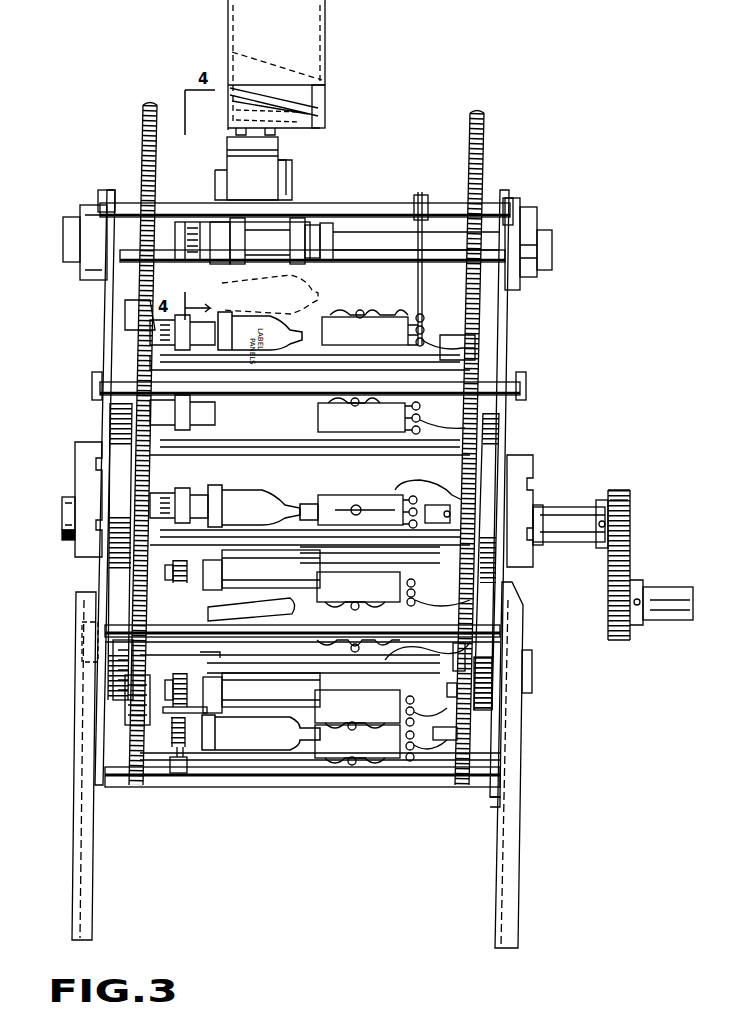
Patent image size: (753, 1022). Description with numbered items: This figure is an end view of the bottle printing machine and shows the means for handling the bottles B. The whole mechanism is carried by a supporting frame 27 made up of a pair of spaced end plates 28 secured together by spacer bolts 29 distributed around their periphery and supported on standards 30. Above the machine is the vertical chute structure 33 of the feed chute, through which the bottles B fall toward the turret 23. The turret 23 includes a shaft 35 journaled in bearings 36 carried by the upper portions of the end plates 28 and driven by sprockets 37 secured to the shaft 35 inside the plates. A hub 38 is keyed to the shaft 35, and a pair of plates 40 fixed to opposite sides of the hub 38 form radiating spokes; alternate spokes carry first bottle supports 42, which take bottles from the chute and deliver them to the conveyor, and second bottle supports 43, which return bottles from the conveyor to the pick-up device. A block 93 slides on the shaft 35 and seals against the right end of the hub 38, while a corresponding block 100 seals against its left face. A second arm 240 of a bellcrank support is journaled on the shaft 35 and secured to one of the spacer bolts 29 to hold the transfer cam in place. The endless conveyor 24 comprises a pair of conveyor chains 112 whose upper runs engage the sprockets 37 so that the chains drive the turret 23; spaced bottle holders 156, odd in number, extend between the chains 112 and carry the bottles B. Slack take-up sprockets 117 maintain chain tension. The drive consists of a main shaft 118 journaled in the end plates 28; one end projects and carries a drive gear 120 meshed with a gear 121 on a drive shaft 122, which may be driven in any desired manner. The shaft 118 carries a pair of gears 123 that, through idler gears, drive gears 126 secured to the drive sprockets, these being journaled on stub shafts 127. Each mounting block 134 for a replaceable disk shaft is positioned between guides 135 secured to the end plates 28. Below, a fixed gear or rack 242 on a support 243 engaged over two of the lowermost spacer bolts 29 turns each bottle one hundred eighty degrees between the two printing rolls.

The chute structure 33 is at (228, 22).
The bottle B is at (312, 90).
The sprockets 37 is at (143, 137).
The plates 40 is at (227, 170).
The second bottle supports 43 is at (206, 196).
The first bottle supports 42 is at (295, 176).
The spacer bolts 29 is at (345, 205).
The turret 23 is at (495, 193).
The bearings 36 is at (90, 212).
The block 100 is at (212, 265).
The hub 38 is at (222, 262).
The block 93 is at (312, 260).
The second arm 240 is at (416, 272).
The shaft 35 is at (443, 258).
The bottle holders 156 is at (348, 311).
The end plates 28 is at (107, 300).
The conveyor chains 112 is at (137, 335).
The endless conveyor 24 is at (526, 386).
The gears 123 is at (492, 432).
The guides 135 is at (85, 442).
The mounting block 134 is at (80, 478).
The drive gear 120 is at (625, 490).
The main shaft 118 is at (562, 512).
The stub shafts 127 is at (82, 636).
The slack take-up sprockets 117 is at (113, 670).
The gears 126 is at (125, 700).
The supporting frame 27 is at (520, 745).
The fixed gear or rack 242 is at (172, 750).
The support 243 is at (180, 782).
The standards 30 is at (93, 845).
The gear 121 is at (622, 640).
The drive shaft 122 is at (662, 622).